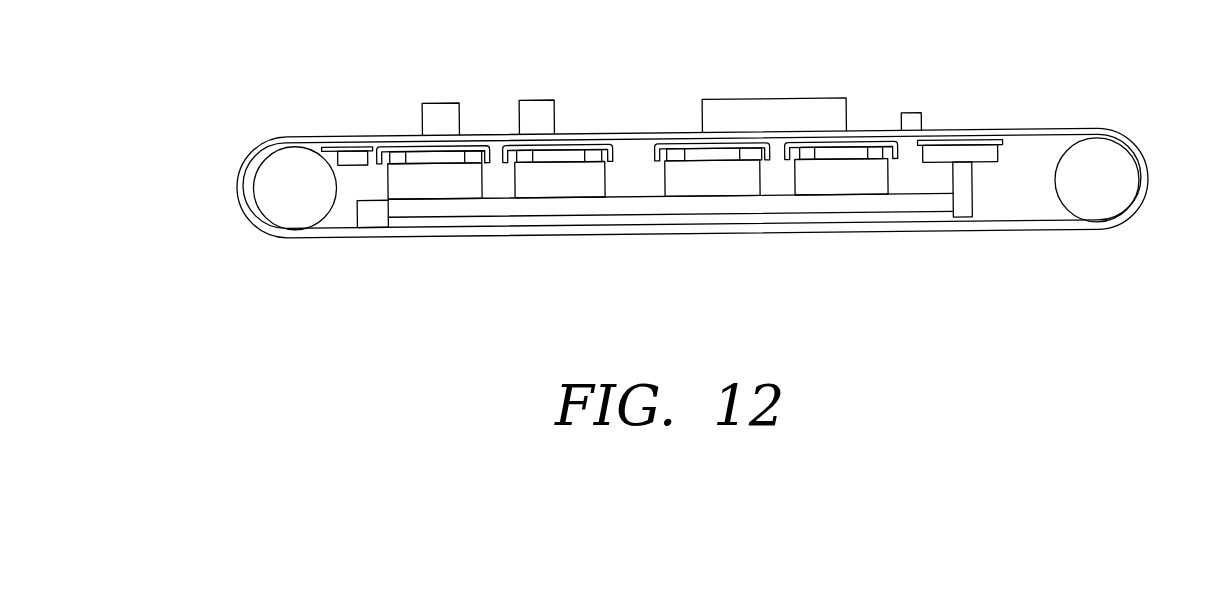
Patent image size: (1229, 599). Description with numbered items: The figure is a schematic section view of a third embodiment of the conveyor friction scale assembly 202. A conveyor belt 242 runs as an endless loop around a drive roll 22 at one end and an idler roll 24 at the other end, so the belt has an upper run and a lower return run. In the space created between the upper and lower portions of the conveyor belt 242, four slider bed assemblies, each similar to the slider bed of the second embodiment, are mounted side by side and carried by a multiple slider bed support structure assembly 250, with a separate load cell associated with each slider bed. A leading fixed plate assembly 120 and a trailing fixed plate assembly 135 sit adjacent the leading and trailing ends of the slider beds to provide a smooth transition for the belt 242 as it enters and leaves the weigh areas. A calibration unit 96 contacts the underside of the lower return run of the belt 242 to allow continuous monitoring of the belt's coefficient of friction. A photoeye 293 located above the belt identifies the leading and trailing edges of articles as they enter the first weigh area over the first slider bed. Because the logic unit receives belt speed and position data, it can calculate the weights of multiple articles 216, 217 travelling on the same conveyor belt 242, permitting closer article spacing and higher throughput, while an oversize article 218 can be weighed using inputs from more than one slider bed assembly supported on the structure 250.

The drive roll 22 is at (280, 190).
The idler roll 24 is at (1105, 186).
The calibration unit 96 is at (372, 220).
The leading fixed plate assembly 120 is at (981, 134).
The trailing fixed plate assembly 135 is at (330, 134).
The scale assembly 202 is at (466, 245).
The article 216 is at (449, 103).
The article 217 is at (540, 100).
The oversize article 218 is at (783, 110).
The conveyor belt 242 is at (1125, 132).
The multiple slider bed support structure assembly 250 is at (639, 211).
The photoeye 293 is at (913, 113).